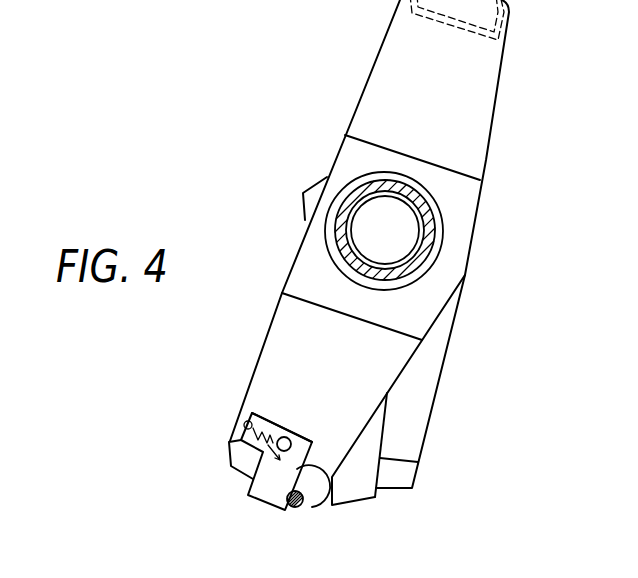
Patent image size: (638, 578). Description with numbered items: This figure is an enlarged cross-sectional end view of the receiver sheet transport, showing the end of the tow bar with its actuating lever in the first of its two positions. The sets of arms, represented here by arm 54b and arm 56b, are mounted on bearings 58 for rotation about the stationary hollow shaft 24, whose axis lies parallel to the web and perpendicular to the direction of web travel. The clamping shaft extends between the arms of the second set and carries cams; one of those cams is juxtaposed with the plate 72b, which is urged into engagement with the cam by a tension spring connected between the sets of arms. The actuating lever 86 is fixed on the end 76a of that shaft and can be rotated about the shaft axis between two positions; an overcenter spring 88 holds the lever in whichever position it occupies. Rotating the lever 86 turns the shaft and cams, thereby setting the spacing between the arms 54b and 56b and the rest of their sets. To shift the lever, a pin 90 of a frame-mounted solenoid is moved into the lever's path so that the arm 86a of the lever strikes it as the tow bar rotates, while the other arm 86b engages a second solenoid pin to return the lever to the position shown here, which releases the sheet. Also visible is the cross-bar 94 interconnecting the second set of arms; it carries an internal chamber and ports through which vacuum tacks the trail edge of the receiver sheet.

The stationary hollow shaft 24 is at (430, 209).
The arm of first set of arms 54b is at (440, 385).
The arm of second set of arms 56b is at (489, 133).
The bearing 58 is at (335, 198).
The plate 72b is at (377, 498).
The end of shaft 76a is at (300, 438).
The actuating lever 86 is at (320, 436).
The arm of lever 86a is at (318, 481).
The arm of lever 86b is at (274, 413).
The overcenter spring 88 is at (234, 441).
The pin 90 is at (291, 507).
The cross-bar 94 is at (503, 36).